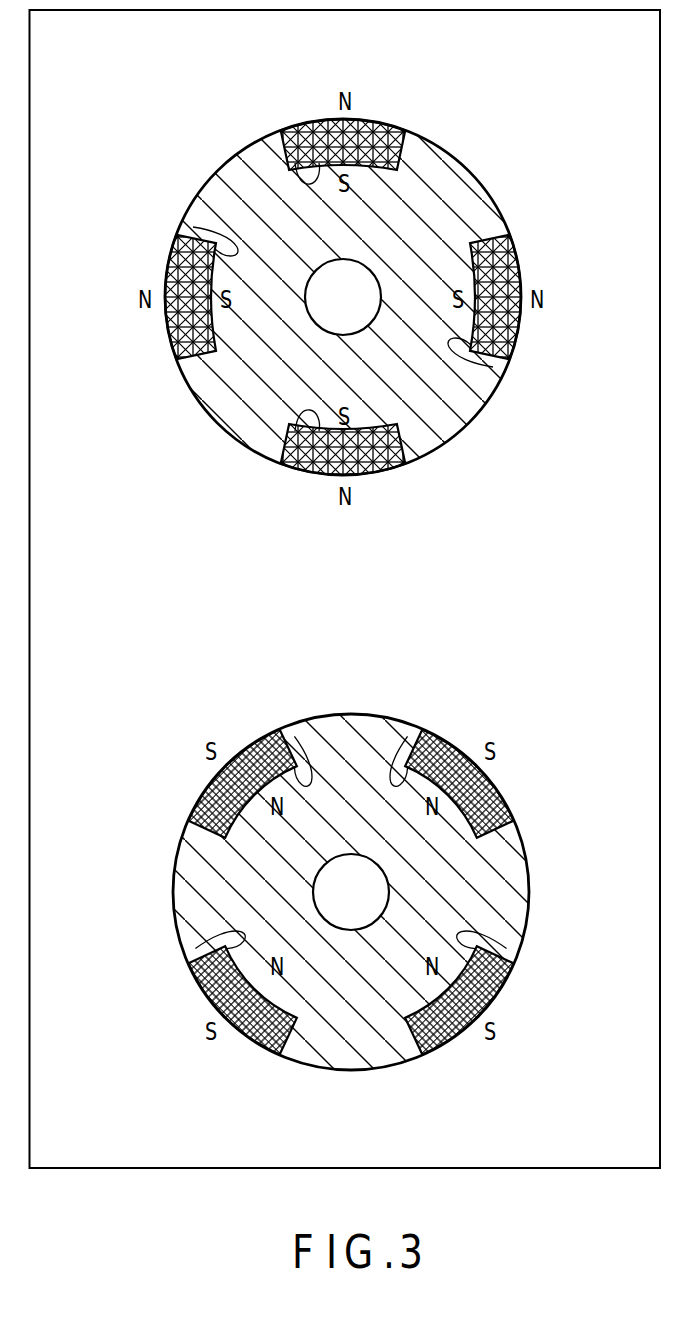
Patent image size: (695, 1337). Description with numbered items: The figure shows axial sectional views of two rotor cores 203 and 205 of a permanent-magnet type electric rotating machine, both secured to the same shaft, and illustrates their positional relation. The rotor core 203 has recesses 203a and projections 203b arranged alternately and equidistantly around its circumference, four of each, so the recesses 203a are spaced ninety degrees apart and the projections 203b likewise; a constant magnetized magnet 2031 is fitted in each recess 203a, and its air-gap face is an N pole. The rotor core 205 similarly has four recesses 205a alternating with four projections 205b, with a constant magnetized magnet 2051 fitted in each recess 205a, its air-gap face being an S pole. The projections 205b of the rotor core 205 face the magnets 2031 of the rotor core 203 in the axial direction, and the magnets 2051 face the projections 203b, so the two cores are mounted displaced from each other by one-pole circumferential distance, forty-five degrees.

The rotor core 203 is at (511, 86).
The recess 203a is at (295, 163).
The projection 203b is at (237, 166).
The constant magnetized magnet 2031 is at (408, 107).
The rotor core 205 is at (511, 688).
The recess 205a is at (294, 736).
The projection 205b is at (347, 716).
The constant magnetized magnet 2051 is at (200, 798).